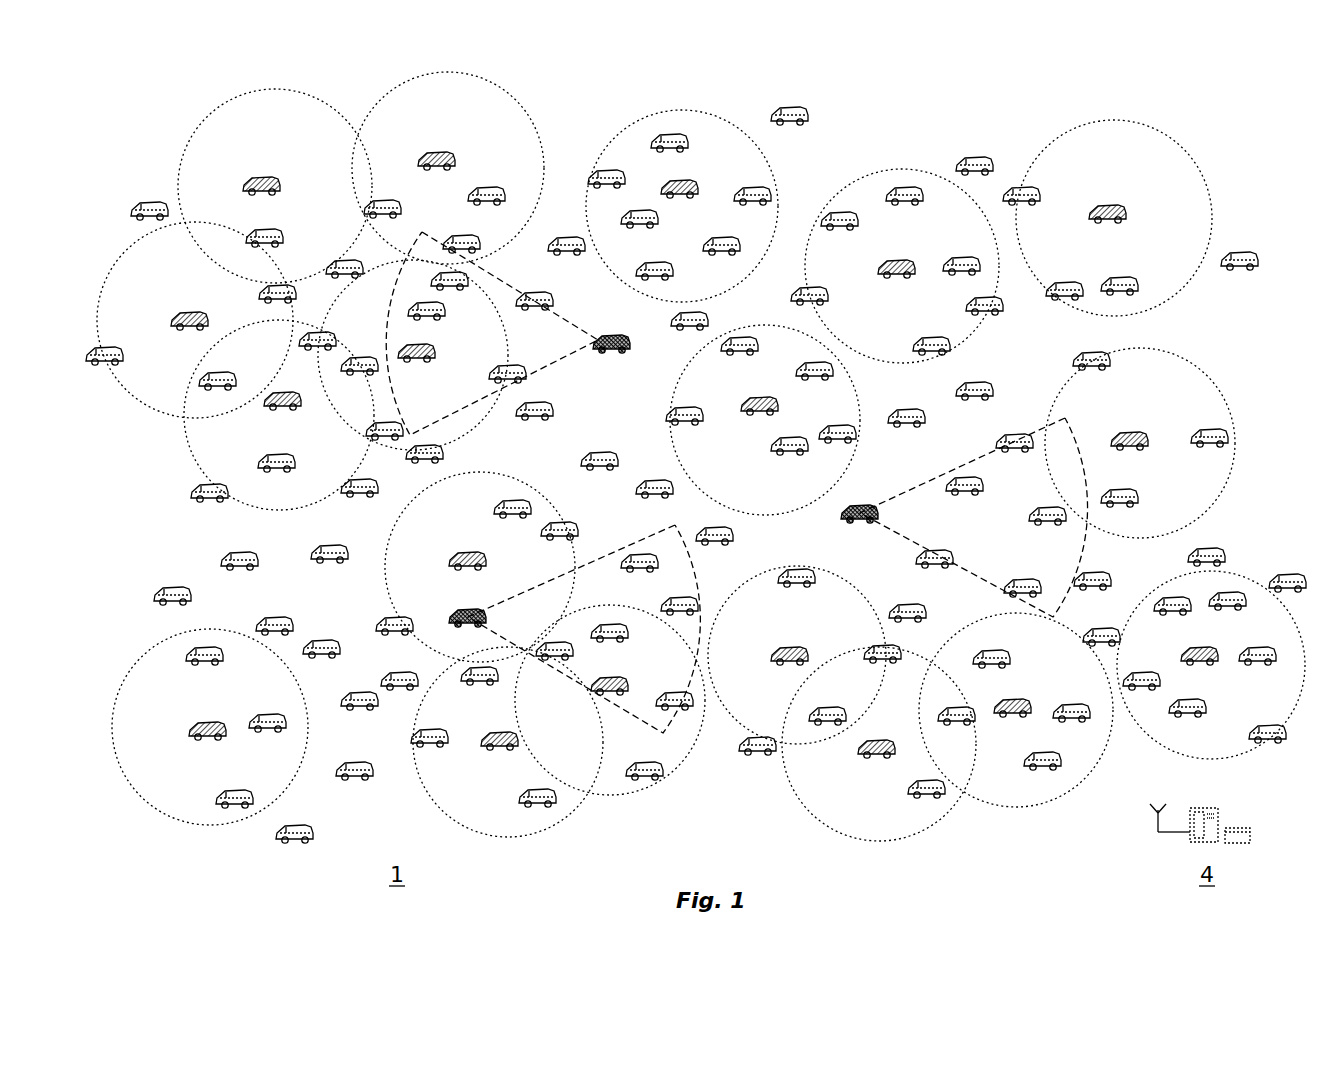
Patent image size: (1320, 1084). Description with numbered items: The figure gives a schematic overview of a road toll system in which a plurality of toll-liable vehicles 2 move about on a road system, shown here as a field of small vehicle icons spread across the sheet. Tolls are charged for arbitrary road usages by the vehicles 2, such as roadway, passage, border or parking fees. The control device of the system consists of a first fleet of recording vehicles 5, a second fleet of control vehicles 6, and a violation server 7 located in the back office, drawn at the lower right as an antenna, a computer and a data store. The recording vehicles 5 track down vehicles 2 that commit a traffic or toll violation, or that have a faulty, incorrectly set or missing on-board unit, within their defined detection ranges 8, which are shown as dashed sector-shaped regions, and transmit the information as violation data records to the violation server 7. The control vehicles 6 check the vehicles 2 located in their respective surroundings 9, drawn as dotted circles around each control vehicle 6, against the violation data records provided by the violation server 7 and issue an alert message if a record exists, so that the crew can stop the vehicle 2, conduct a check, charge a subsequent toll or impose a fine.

The vehicle 2 is at (960, 157).
The recording vehicle 5 is at (616, 352).
The control vehicle 6 is at (262, 178).
The violation server 7 is at (1240, 818).
The transmission sector 8 is at (392, 302).
The surroundings 9 is at (180, 165).